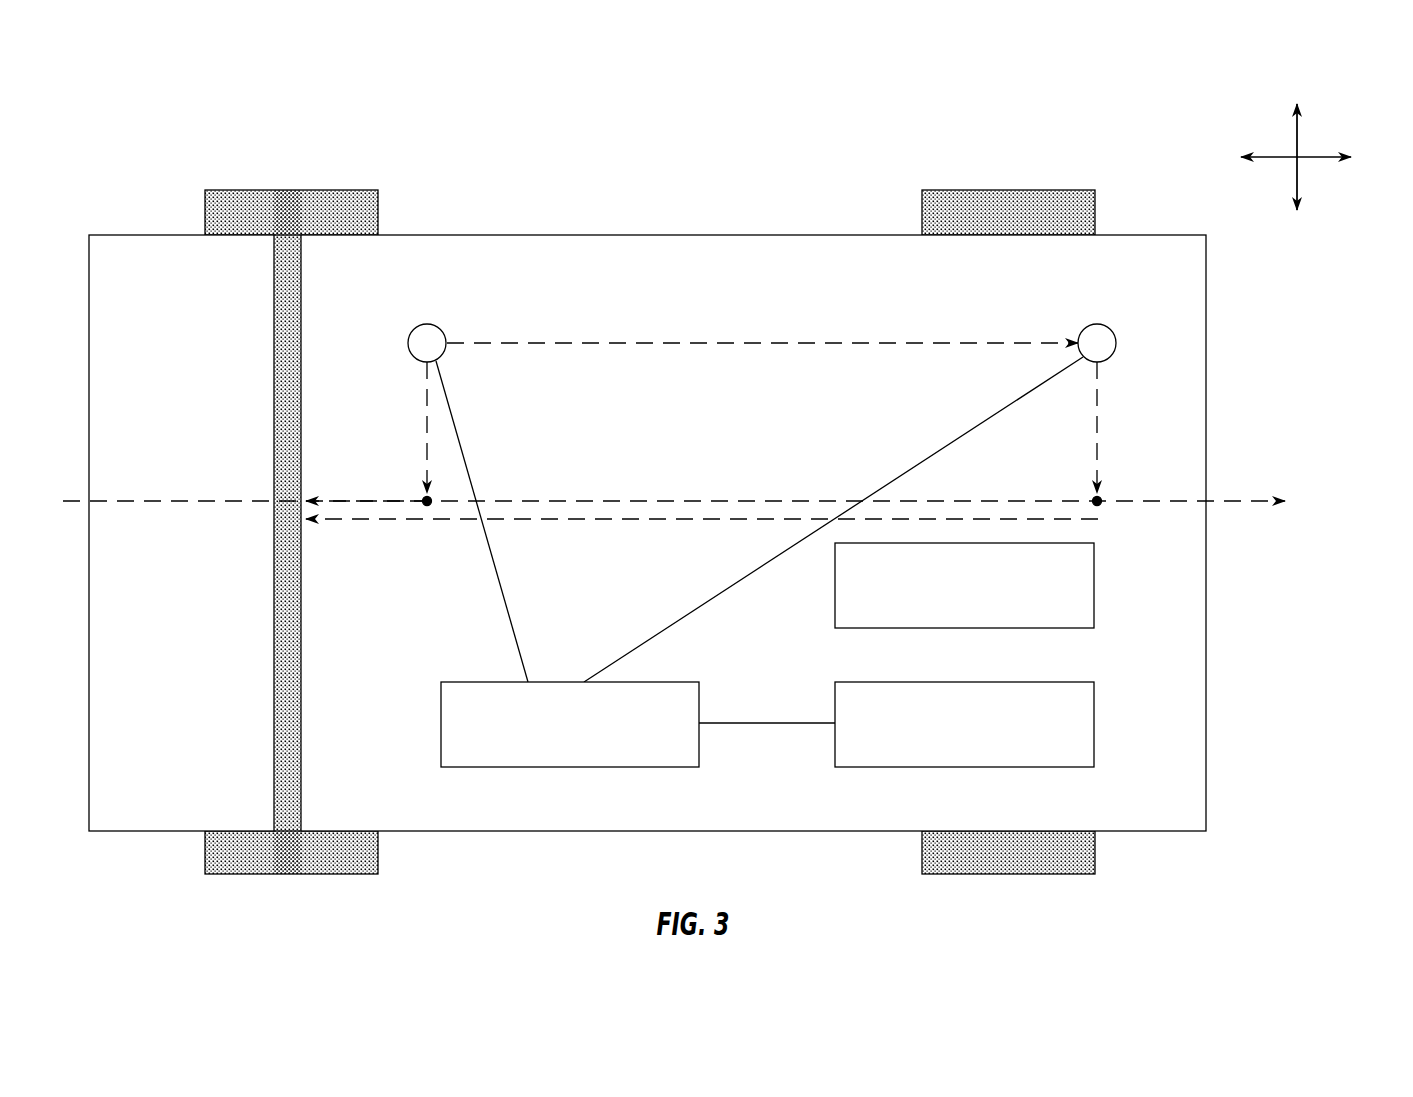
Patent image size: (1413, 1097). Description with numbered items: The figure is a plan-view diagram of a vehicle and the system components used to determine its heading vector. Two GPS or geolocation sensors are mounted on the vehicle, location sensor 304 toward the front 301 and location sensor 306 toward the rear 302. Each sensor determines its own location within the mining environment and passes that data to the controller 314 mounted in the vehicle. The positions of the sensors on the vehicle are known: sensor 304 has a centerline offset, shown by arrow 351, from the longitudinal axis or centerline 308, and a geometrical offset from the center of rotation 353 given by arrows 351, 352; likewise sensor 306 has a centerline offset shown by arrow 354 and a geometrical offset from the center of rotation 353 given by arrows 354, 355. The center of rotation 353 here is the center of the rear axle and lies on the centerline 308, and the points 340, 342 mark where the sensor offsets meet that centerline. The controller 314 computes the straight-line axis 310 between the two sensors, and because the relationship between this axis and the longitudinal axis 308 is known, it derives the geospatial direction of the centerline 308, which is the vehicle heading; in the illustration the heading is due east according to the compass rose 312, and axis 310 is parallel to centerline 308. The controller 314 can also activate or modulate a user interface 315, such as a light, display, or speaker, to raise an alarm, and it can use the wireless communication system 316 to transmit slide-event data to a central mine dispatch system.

The front of the vehicle 301 is at (1213, 364).
The rear of the vehicle 302 is at (80, 445).
The location sensor 304 is at (1101, 326).
The location sensor 306 is at (441, 328).
The centerline 308 is at (1229, 507).
The straight-line axis 310 is at (622, 343).
The compass rose 312 is at (1335, 194).
The controller 314 is at (570, 724).
The user interface 315 is at (964, 724).
The wireless communication system 316 is at (964, 585).
The projected point of second receiver on centerline 340 is at (431, 496).
The projected point of first receiver on centerline 342 is at (1100, 495).
The centerline offset arrow 351 is at (1101, 427).
The geometrical offset arrow 352 is at (1057, 517).
The center of rotation 353 is at (268, 512).
The centerline offset arrow 354 is at (425, 427).
The geometrical offset arrow 355 is at (342, 500).